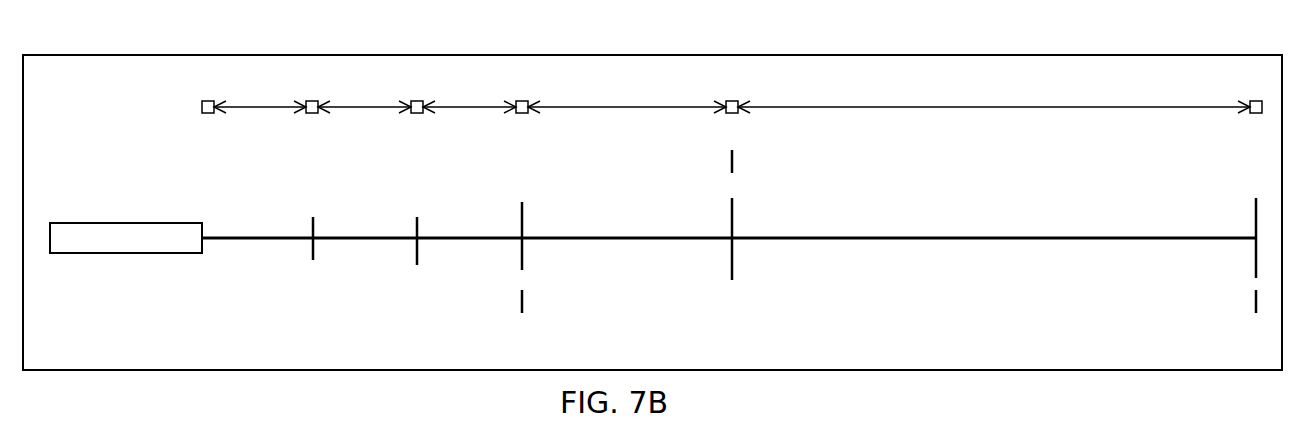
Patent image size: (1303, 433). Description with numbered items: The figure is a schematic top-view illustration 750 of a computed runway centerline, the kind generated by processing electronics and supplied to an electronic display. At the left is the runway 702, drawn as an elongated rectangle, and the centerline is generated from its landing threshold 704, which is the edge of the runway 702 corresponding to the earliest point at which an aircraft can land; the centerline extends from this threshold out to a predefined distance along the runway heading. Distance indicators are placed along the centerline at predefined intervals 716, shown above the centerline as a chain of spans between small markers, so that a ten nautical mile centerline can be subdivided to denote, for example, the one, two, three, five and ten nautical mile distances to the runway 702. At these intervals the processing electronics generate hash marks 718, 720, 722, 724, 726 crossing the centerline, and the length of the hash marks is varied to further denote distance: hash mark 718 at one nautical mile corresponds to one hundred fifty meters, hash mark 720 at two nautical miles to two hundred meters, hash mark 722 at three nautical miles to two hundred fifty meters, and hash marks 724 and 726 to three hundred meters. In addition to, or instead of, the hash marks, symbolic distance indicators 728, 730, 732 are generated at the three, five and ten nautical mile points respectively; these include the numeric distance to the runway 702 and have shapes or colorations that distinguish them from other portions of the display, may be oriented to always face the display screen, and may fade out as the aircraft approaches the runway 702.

The illustration 750 is at (133, 28).
The predefined intervals 716 is at (263, 104).
The runway 702 is at (103, 234).
The landing threshold 704 is at (208, 210).
The hash mark 718 is at (315, 226).
The hash mark 720 is at (419, 226).
The hash mark 722 is at (524, 213).
The hash mark 724 is at (734, 210).
The hash mark 726 is at (1254, 212).
The symbolic distance indicator 728 is at (524, 305).
The symbolic distance indicator 730 is at (734, 160).
The symbolic distance indicator 732 is at (1254, 305).